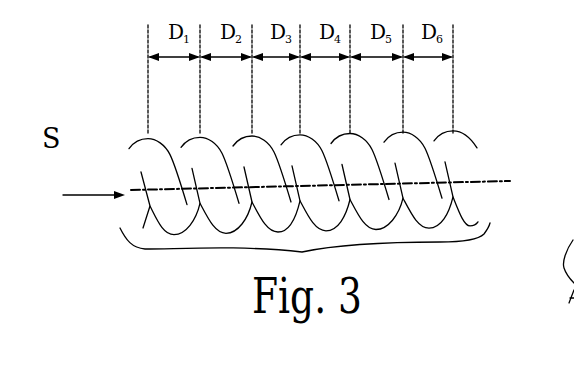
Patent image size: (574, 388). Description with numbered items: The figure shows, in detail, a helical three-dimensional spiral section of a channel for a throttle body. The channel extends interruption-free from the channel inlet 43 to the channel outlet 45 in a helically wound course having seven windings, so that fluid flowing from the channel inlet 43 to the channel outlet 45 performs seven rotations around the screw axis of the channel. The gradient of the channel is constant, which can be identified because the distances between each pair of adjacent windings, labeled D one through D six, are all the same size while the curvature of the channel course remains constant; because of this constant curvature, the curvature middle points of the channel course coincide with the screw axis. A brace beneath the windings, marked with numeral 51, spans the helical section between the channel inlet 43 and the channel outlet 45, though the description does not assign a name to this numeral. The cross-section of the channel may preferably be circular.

The channel inlet 43 is at (139, 157).
The channel outlet 45 is at (469, 168).
The coil spring with varying pitch 51 is at (407, 250).